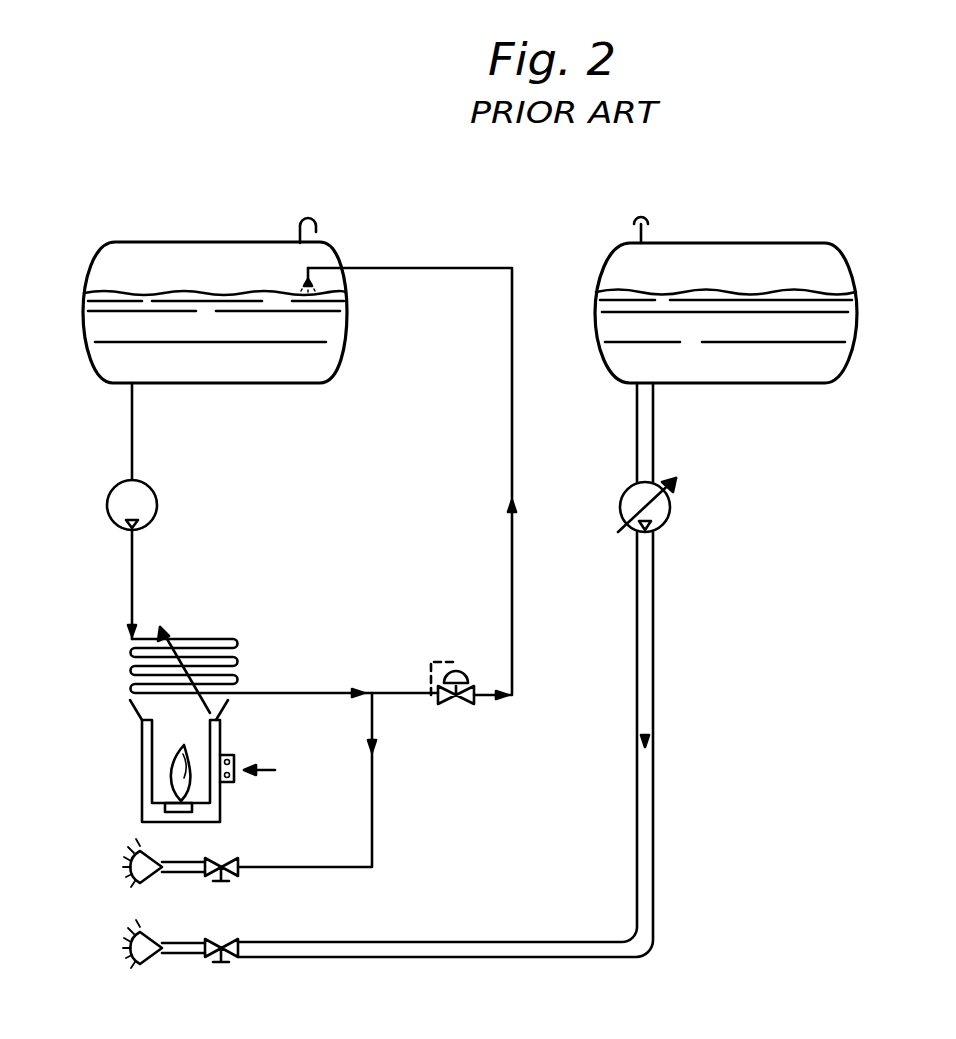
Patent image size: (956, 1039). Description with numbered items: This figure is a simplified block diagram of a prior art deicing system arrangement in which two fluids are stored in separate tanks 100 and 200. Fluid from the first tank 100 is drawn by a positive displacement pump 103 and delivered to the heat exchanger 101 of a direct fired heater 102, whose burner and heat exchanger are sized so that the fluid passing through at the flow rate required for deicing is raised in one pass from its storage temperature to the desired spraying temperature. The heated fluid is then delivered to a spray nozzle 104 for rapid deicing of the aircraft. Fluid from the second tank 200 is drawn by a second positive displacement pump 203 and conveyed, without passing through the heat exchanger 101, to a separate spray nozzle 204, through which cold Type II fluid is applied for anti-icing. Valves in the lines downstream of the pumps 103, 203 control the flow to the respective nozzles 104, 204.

The tank 100 is at (258, 242).
The tank 200 is at (806, 205).
The pump 103 is at (157, 500).
The pump 203 is at (668, 520).
The heat exchanger 101 is at (237, 639).
The direct fired heater 102 is at (142, 752).
The spray nozzle 104 is at (133, 875).
The spray nozzle 204 is at (133, 956).